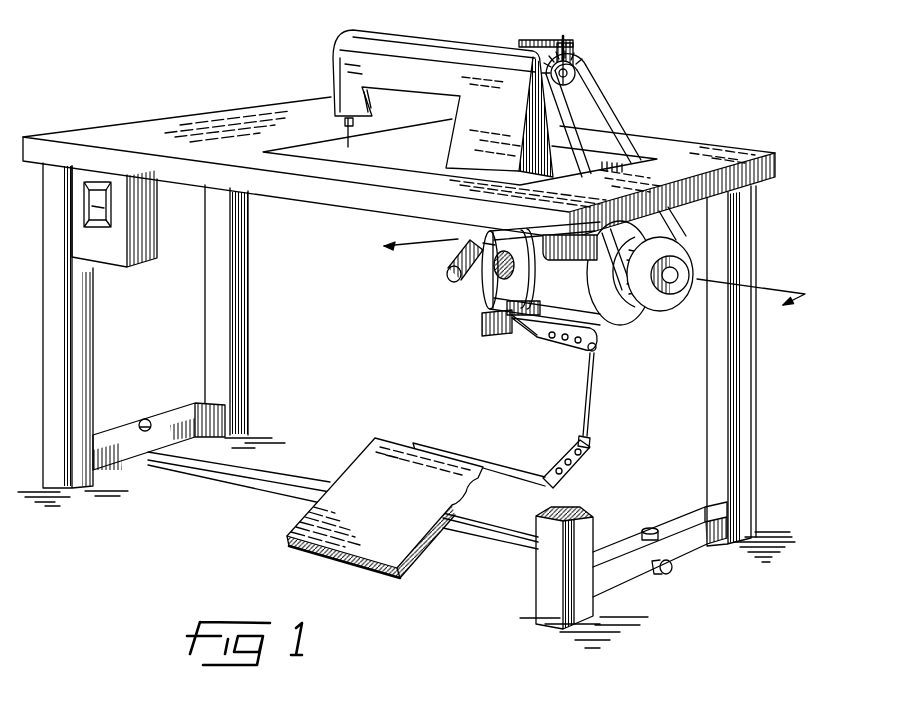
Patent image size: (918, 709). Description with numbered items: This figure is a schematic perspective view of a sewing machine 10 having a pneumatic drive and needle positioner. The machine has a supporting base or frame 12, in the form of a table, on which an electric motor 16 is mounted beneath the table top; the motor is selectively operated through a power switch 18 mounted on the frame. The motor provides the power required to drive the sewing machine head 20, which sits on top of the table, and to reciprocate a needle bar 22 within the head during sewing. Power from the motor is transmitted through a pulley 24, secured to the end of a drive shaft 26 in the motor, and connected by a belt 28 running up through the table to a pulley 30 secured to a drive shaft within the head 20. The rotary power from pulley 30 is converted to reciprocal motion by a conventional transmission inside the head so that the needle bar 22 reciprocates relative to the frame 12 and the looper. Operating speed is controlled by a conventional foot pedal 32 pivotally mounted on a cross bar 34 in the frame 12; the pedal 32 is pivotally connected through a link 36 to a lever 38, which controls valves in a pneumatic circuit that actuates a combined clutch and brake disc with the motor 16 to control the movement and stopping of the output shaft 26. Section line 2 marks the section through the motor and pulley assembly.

The sewing machine 10 is at (172, 82).
The supporting base or frame 12 is at (745, 153).
The electric motor 16 is at (609, 332).
The power switch 18 is at (103, 264).
The sewing machine head 20 is at (428, 45).
The needle bar 22 is at (346, 140).
The pulley 24 is at (675, 305).
The drive shaft 26 is at (674, 258).
The belt 28 is at (625, 124).
The pulley 30 is at (579, 86).
The foot pedal 32 is at (389, 452).
The cross bar 34 is at (503, 543).
The link 36 is at (590, 400).
The lever 38 is at (514, 335).
The section line 2- 2 is at (582, 284).